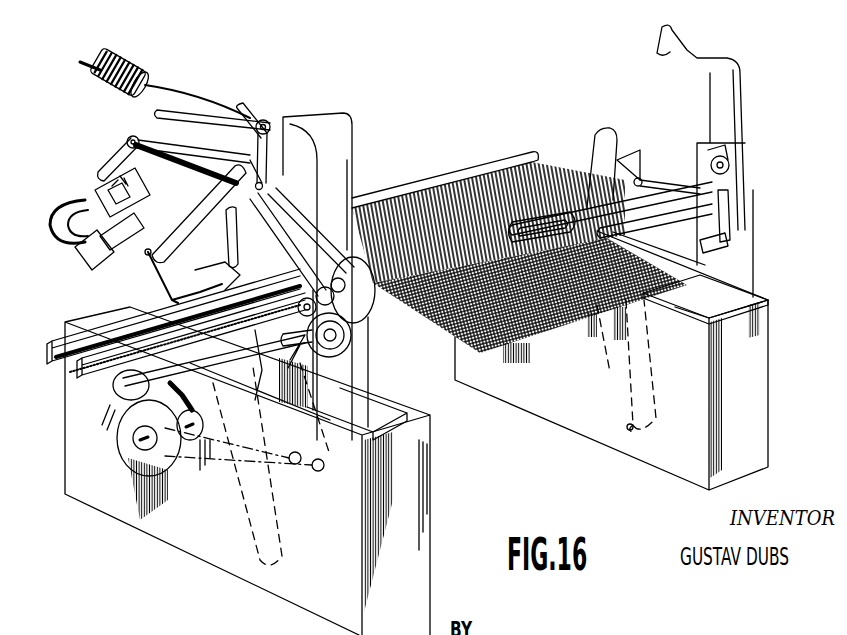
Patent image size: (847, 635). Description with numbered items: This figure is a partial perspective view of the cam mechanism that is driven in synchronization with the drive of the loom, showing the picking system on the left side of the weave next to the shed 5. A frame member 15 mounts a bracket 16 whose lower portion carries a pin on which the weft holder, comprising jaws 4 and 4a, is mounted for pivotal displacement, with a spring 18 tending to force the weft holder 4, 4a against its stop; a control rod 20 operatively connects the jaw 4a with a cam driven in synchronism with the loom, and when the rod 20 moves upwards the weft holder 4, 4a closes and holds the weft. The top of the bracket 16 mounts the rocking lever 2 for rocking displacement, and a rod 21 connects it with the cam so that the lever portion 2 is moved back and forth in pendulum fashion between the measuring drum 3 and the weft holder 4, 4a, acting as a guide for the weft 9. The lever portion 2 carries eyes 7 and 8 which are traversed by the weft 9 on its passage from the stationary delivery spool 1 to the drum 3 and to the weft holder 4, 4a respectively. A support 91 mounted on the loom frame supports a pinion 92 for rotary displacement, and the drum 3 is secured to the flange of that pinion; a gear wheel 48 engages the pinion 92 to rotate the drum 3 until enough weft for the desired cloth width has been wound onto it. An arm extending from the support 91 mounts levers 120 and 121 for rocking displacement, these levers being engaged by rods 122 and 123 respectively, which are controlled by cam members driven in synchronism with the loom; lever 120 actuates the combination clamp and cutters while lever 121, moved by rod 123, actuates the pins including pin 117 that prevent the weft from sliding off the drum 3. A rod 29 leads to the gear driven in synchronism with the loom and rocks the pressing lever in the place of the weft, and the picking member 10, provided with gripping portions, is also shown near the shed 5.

The stationary storage spool 1 is at (128, 60).
The weft 9 is at (205, 98).
The lever 120 is at (105, 165).
The gear wheel 48 is at (90, 200).
The lever 121 is at (126, 184).
The eye 7 is at (262, 140).
The bracket 16 is at (322, 136).
The rocking lever 2 is at (194, 207).
The rod 21 is at (261, 187).
The rod 122 is at (264, 203).
The support 91 is at (52, 225).
The pinion 92 is at (70, 238).
The eye 8 is at (150, 256).
The rod 123 is at (226, 240).
The measuring drum 3 is at (80, 262).
The pin 117 is at (105, 262).
The rod 29 is at (183, 310).
The frame member 15 is at (425, 522).
The shed 5 is at (548, 195).
The picking member 10 is at (585, 200).
The control rod 20 is at (744, 163).
The weft holder jaw 4a is at (732, 200).
The weft holder jaw 4 is at (725, 222).
The spring 18 is at (712, 237).